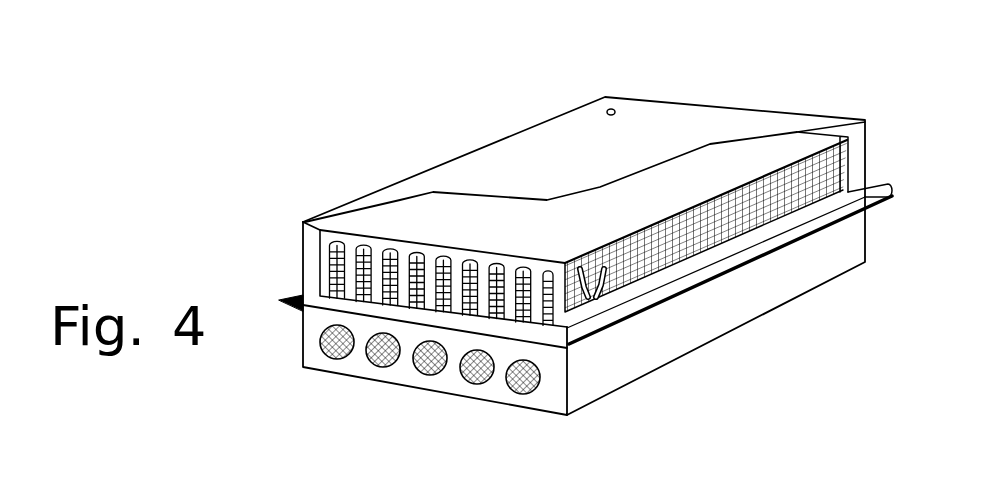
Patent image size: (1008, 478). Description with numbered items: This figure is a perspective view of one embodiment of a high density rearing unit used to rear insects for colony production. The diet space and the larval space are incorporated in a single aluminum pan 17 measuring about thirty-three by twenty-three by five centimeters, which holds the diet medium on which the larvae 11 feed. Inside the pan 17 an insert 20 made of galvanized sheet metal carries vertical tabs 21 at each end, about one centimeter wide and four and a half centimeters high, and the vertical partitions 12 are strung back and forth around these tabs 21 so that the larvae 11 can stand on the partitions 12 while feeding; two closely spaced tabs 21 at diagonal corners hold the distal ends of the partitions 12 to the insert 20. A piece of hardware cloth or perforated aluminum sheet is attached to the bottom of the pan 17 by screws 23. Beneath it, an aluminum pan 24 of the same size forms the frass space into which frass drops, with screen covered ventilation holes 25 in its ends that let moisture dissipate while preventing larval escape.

The larvae 11 is at (611, 243).
The vertical partitions 12 is at (730, 217).
The aluminum pan 17 is at (750, 115).
The insert 20 is at (463, 237).
The vertical tabs 21 is at (553, 311).
The screws 23 is at (607, 108).
The frass collection pan 24 is at (812, 265).
The screen covered ventilation holes 25 is at (302, 334).